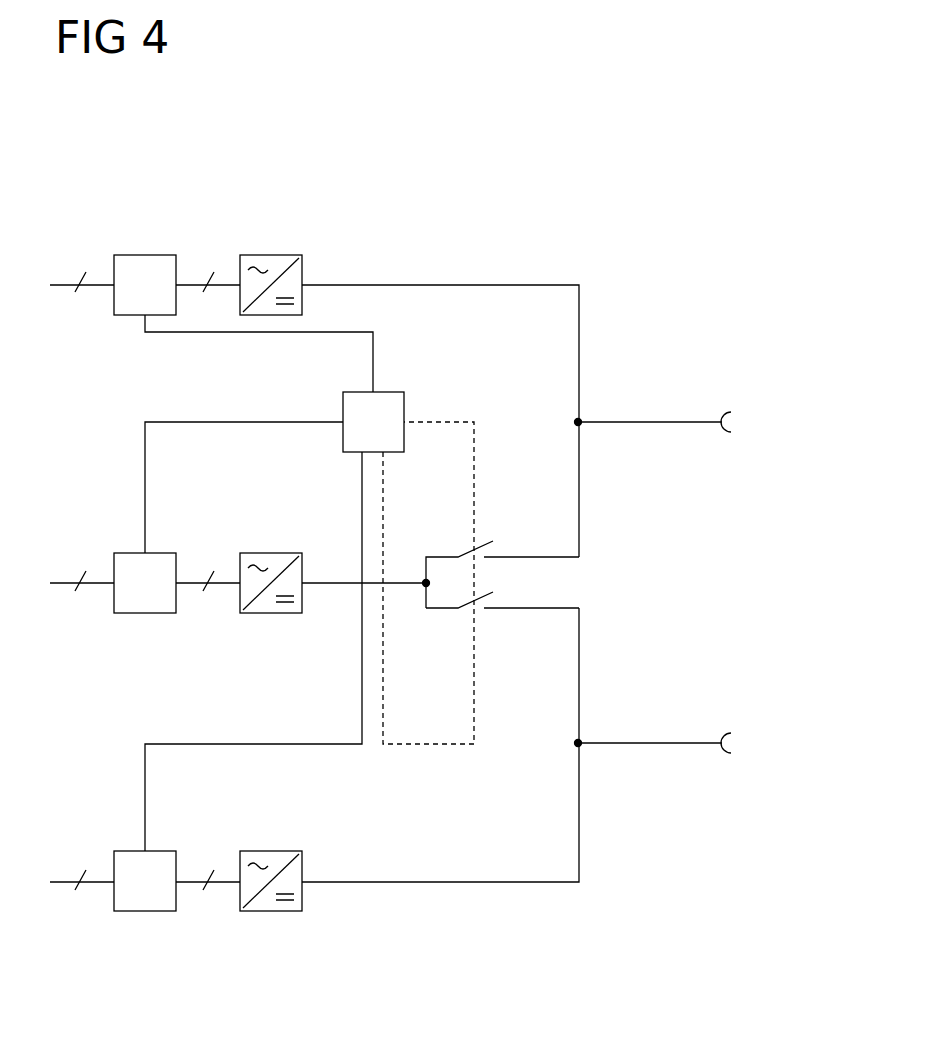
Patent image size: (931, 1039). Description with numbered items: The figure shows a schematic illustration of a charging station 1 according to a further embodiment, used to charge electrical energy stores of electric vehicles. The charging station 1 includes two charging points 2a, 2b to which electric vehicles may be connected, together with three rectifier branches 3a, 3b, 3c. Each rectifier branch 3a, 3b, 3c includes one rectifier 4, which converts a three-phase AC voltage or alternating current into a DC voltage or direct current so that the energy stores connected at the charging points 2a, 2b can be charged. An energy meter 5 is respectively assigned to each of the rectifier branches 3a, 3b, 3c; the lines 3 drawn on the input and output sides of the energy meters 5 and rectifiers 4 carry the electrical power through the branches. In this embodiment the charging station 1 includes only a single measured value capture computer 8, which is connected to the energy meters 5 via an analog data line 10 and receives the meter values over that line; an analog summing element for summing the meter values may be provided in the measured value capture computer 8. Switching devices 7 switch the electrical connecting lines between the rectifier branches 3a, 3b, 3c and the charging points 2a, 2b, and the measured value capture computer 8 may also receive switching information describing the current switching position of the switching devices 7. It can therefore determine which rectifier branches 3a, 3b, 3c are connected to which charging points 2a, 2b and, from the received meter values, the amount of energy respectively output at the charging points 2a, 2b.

The charging station 1 is at (393, 118).
The first charging point 2a is at (740, 420).
The second charging point 2b is at (740, 743).
The electrical line 3 is at (148, 566).
The first rectifier branch 3a is at (292, 238).
The second rectifier branch 3b is at (275, 540).
The third rectifier branch 3c is at (277, 840).
The rectifier 4 is at (273, 255).
The energy meter 5 is at (145, 255).
The switching device 7 is at (490, 525).
The measured value capture computer 8 is at (385, 392).
The analog data line 10 is at (186, 333).